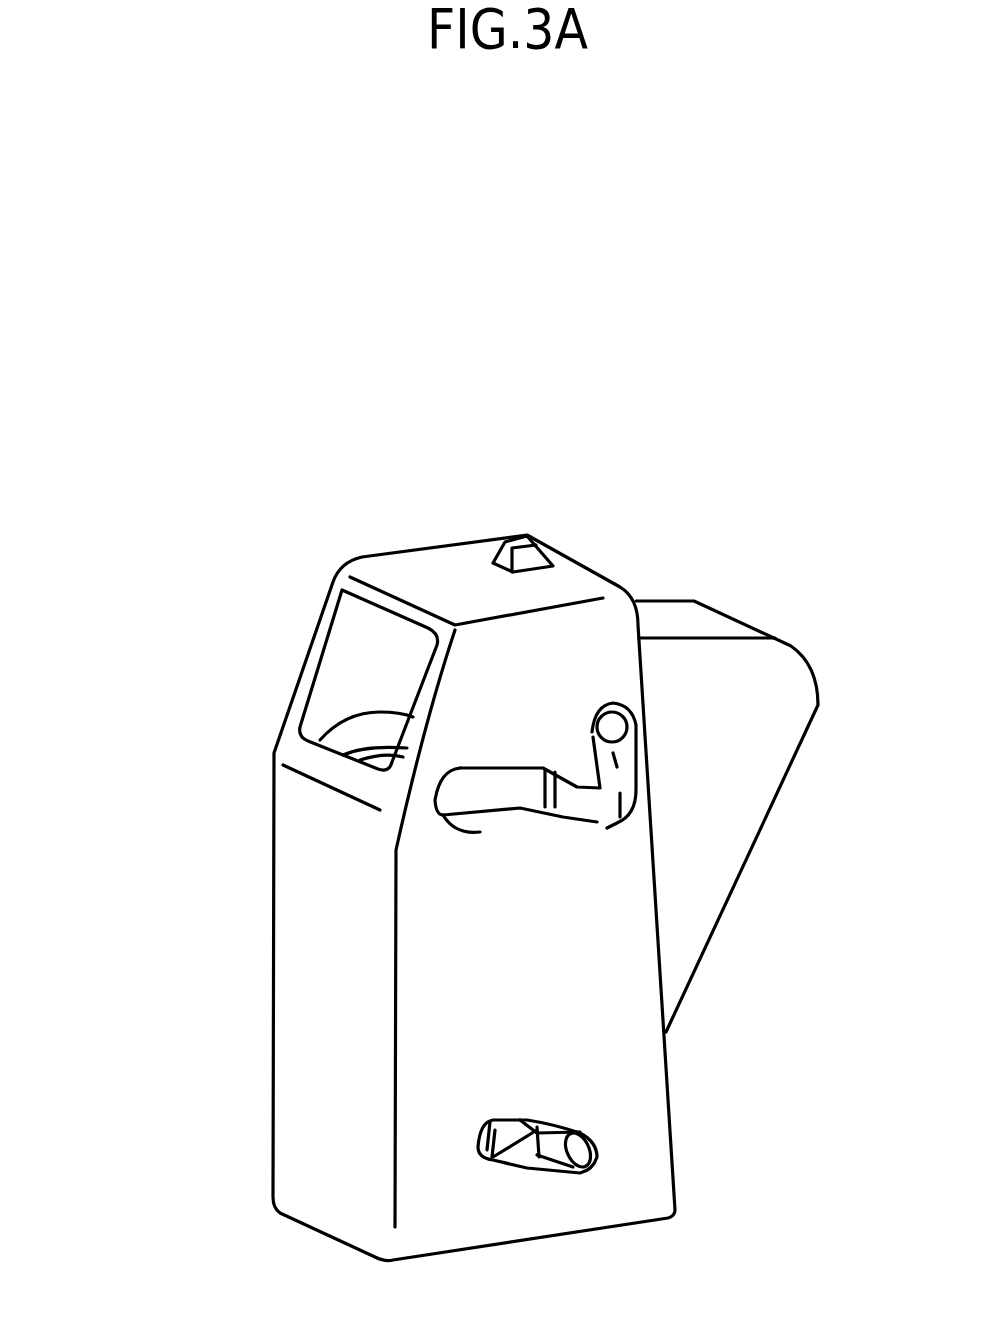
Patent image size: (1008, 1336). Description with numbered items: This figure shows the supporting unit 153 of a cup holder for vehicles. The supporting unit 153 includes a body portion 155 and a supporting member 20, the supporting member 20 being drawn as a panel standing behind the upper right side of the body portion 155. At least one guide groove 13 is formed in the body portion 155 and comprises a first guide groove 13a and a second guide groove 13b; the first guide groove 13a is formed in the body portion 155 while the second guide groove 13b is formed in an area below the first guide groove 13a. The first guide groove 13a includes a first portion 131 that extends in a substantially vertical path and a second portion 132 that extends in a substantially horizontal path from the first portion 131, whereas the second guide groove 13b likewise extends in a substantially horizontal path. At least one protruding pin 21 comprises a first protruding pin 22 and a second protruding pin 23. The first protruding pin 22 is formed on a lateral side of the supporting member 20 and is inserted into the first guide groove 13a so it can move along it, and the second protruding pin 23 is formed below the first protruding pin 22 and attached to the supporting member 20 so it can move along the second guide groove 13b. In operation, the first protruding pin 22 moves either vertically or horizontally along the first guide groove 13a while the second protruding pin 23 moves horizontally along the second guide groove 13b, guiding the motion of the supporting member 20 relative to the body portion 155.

The supporting unit 153 is at (256, 525).
The body portion 155 is at (590, 585).
The supporting member 20 is at (797, 674).
The protruding pin 21 is at (713, 937).
The first protruding pin 22 is at (613, 727).
The second protruding pin 23 is at (580, 1147).
The guide groove 13 is at (329, 955).
The first guide groove 13a is at (357, 845).
The first portion 131 is at (620, 815).
The second portion 132 is at (462, 797).
The second guide groove 13b is at (493, 1127).